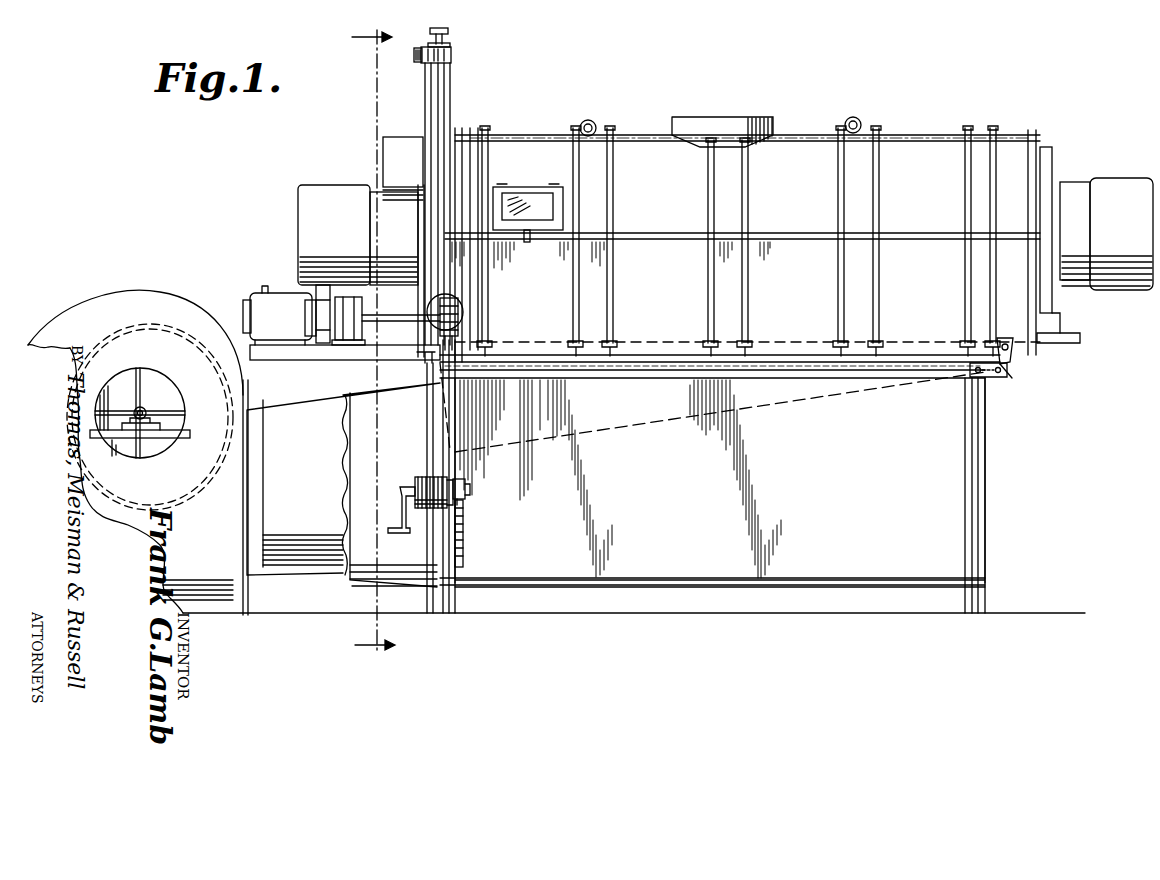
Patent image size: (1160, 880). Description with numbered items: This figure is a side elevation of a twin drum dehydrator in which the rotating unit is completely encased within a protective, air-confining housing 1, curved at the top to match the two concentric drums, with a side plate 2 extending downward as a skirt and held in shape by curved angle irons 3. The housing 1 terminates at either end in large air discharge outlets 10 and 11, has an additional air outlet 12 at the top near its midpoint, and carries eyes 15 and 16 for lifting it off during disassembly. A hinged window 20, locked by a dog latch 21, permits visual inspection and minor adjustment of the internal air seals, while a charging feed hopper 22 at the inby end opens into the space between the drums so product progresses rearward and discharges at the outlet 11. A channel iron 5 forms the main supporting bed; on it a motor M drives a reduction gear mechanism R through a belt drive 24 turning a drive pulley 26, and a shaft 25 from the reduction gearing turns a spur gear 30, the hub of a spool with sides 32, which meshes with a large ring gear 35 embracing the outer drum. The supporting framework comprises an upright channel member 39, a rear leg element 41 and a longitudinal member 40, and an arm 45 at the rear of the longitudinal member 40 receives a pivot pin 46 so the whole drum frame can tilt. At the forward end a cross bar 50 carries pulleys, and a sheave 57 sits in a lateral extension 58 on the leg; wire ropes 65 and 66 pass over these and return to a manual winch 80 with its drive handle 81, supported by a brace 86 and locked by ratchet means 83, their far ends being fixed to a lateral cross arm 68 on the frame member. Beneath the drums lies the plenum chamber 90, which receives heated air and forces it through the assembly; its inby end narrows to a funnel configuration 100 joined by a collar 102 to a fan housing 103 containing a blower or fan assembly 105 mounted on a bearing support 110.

The housing 1 is at (644, 138).
The side plate 2 is at (373, 339).
The curved angle irons 3 is at (880, 178).
The channel iron 5 is at (652, 343).
The air discharge outlet 10 is at (338, 235).
The air discharge outlet 11 is at (1126, 235).
The air outlet 12 is at (735, 115).
The eye 15 is at (592, 120).
The eye 16 is at (858, 116).
The window 20 is at (522, 192).
The dog latch 21 is at (528, 240).
The charging feed hopper 22 is at (398, 137).
The belt drive 24 is at (322, 285).
The shaft 25 is at (390, 318).
The drive pulley 26 is at (304, 300).
The spur gear 30 is at (458, 303).
The spool sides 32 is at (462, 328).
The ring gear 35 is at (452, 290).
The upright channel member 39 is at (462, 578).
The longitudinal member 40 is at (640, 372).
The rear leg element 41 is at (978, 490).
The arm 45 is at (1002, 373).
The pivot pin 46 is at (1005, 342).
The cross bar 50 is at (443, 38).
The sheave 57 is at (416, 64).
The lateral extension 58 is at (448, 60).
The wire rope 65 is at (428, 404).
The wire rope 66 is at (428, 440).
The lateral cross arm 68 is at (425, 370).
The manual winch 80 is at (420, 480).
The drive handle 81 is at (402, 532).
The ratchet means 83 is at (468, 478).
The brace 86 is at (464, 532).
The plenum chamber 90 is at (964, 450).
The funnel configuration 100 is at (402, 437).
The collar 102 is at (263, 410).
The fan housing 103 is at (146, 300).
The blower or fan assembly 105 is at (135, 375).
The bearing support 110 is at (146, 410).
The motor M is at (277, 315).
The reduction gear mechanism R is at (360, 304).